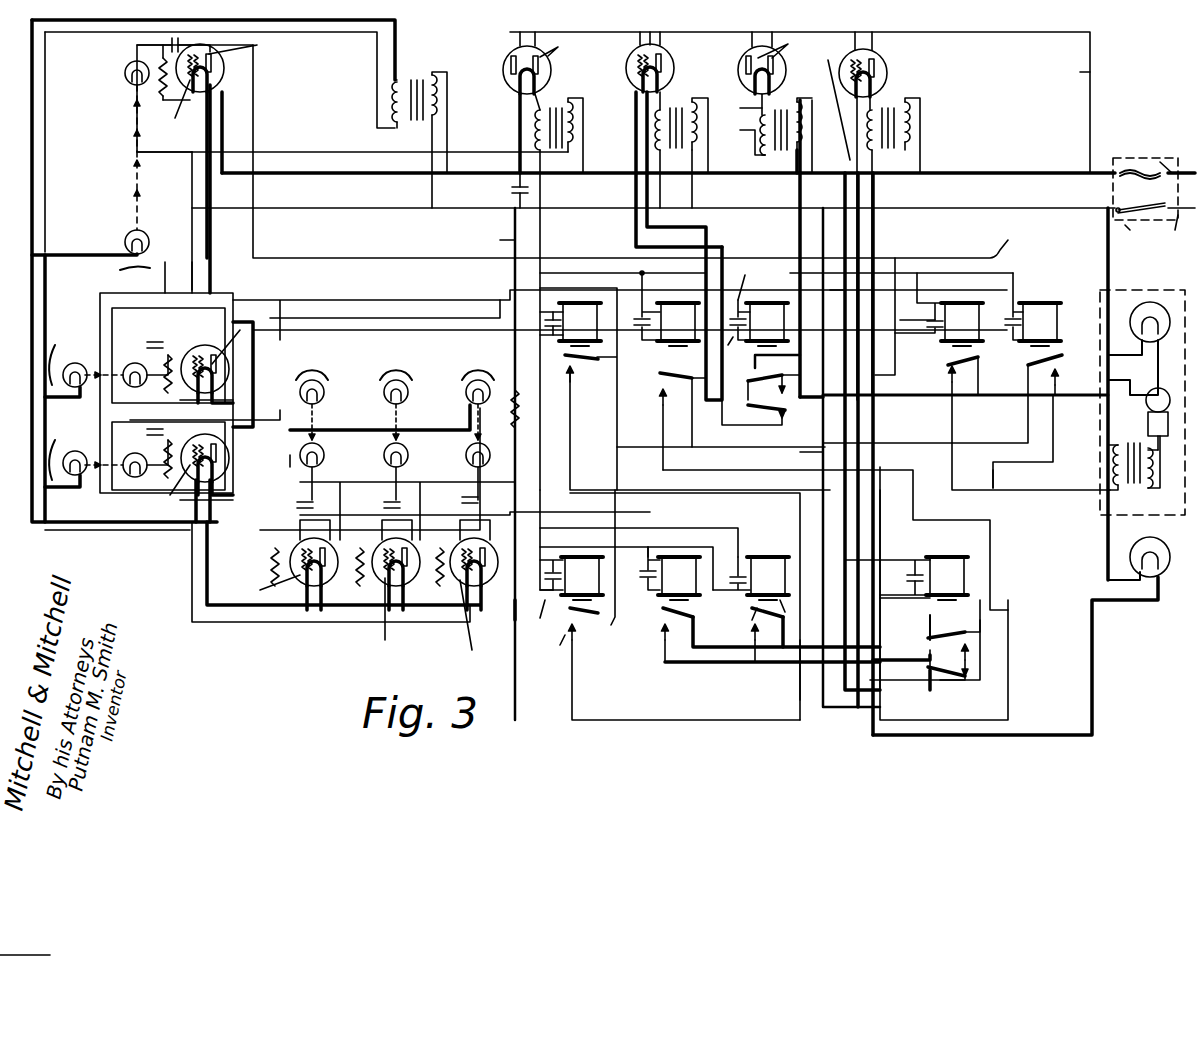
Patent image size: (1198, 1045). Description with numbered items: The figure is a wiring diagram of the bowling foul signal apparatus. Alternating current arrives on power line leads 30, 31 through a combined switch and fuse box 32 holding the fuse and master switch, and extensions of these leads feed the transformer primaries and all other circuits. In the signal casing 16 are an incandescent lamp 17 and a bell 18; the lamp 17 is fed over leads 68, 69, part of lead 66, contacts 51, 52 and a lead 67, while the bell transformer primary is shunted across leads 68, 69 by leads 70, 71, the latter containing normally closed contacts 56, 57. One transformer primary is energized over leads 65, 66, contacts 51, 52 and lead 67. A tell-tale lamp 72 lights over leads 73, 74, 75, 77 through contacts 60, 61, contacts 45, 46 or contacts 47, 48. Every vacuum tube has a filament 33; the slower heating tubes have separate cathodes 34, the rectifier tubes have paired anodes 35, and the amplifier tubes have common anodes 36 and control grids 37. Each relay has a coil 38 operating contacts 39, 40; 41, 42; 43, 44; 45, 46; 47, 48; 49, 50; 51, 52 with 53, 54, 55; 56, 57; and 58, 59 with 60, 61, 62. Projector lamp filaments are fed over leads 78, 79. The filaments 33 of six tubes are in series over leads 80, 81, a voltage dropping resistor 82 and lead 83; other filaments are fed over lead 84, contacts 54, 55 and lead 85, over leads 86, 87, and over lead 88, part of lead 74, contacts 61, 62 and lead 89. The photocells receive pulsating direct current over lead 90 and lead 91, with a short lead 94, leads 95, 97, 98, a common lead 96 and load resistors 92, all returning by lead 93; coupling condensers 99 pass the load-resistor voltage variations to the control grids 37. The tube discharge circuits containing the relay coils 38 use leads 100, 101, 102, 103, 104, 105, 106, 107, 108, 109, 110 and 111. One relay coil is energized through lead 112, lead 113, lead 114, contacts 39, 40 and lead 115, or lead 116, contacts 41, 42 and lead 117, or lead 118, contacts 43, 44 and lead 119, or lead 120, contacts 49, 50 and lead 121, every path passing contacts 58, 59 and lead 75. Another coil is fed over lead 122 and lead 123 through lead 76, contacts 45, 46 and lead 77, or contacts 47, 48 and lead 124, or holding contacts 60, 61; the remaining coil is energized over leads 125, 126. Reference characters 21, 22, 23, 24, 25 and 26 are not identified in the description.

The signal housing 16 is at (1142, 389).
The incandescent lamp 17 is at (1141, 317).
The bell 18 is at (1164, 406).
The lamp 21 is at (116, 471).
The lamp 22 is at (116, 355).
The light beam 23 is at (325, 418).
The light beam 24 is at (409, 418).
The light beam 25 is at (456, 409).
The light beam 26 is at (122, 157).
The power line lead 30 is at (1172, 156).
The power line lead 31 is at (1178, 232).
The combined switch and fuse box 32 is at (1133, 235).
The filament 33 is at (557, 336).
The cathode 34 is at (435, 359).
The plate 35 is at (673, 45).
The common anode 36 is at (354, 281).
The control grid 37 is at (337, 296).
The electro-magnetic coil 38 is at (810, 444).
The contact 39 is at (700, 428).
The contact 40 is at (561, 378).
The contact 41 is at (678, 402).
The contact 42 is at (652, 427).
The contact 43 is at (550, 640).
The contact 44 is at (685, 672).
The contact 45 is at (774, 632).
The contact 46 is at (650, 643).
The contact 47 is at (742, 618).
The contact 48 is at (743, 643).
The contact 49 is at (1053, 367).
The contact 50 is at (1069, 381).
The contact 51 is at (777, 365).
The contact 52 is at (757, 385).
The contact 53 is at (810, 397).
The contact 54 is at (780, 389).
The contact 55 is at (798, 417).
The contact 56 is at (950, 372).
The contact 57 is at (938, 380).
The contact 58 is at (961, 621).
The contact 59 is at (915, 625).
The contact 60 is at (957, 645).
The contact 61 is at (928, 653).
The contact 62 is at (950, 677).
The lead 65 is at (813, 173).
The lead 66 is at (786, 248).
The lead 67 is at (956, 304).
The lead 68 is at (1108, 394).
The lead 69 is at (956, 420).
The lead 70 is at (1133, 367).
The lead 71 is at (1031, 437).
The tell-tale lamp 72 is at (1150, 543).
The lead 73 is at (1104, 515).
The lead 74 is at (1015, 665).
The lead 75 is at (888, 462).
The lead 76 is at (772, 656).
The lead 77 is at (758, 632).
The lead 78 is at (268, 274).
The lead 79 is at (262, 288).
The lead 80 is at (338, 345).
The lead 81 is at (517, 556).
The voltage dropping resistor 82 is at (513, 398).
The lead 83 is at (497, 464).
The lead 84 is at (721, 287).
The lead 85 is at (680, 257).
The lead 86 is at (742, 105).
The lead 87 is at (743, 138).
The lead 88 is at (879, 454).
The lead 89 is at (890, 431).
The lead 90 is at (800, 91).
The lead 91 is at (343, 277).
The load resistor 92 is at (292, 315).
The lead 93 is at (591, 434).
The short lead 94 is at (166, 393).
The lead 95 is at (208, 457).
The common lead 96 is at (620, 370).
The lead 97 is at (146, 135).
The lead 98 is at (175, 121).
The coupling condenser 99 is at (302, 274).
The lead 100 is at (578, 349).
The lead 101 is at (586, 344).
The lead 102 is at (623, 287).
The lead 103 is at (460, 328).
The lead 104 is at (543, 390).
The lead 105 is at (430, 543).
The lead 106 is at (626, 569).
The lead 107 is at (490, 505).
The lead 108 is at (691, 569).
The lead 109 is at (655, 533).
The lead 110 is at (835, 308).
The lead 111 is at (582, 151).
The lead 112 is at (687, 206).
The lead 113 is at (744, 345).
The lead 114 is at (720, 408).
The lead 115 is at (796, 573).
The short lead 116 is at (693, 391).
The lead 117 is at (832, 505).
The lead 118 is at (620, 552).
The lead 119 is at (690, 677).
The lead 120 is at (885, 420).
The lead 121 is at (997, 528).
The lead 122 is at (860, 298).
The lead 123 is at (905, 603).
The lead 124 is at (782, 603).
The lead 125 is at (901, 183).
The lead 126 is at (916, 329).